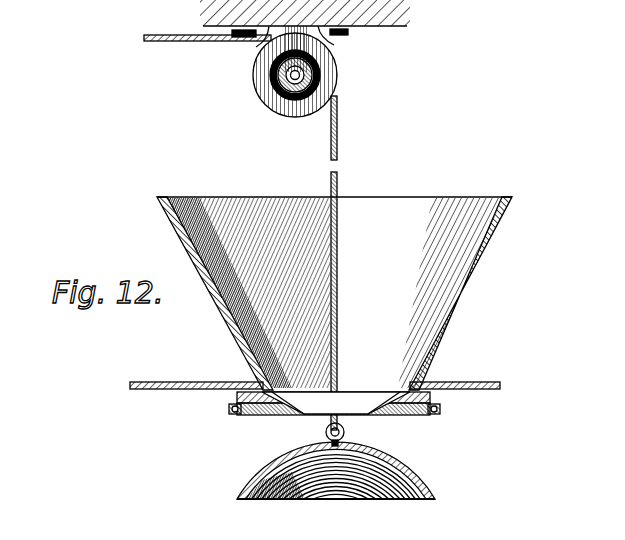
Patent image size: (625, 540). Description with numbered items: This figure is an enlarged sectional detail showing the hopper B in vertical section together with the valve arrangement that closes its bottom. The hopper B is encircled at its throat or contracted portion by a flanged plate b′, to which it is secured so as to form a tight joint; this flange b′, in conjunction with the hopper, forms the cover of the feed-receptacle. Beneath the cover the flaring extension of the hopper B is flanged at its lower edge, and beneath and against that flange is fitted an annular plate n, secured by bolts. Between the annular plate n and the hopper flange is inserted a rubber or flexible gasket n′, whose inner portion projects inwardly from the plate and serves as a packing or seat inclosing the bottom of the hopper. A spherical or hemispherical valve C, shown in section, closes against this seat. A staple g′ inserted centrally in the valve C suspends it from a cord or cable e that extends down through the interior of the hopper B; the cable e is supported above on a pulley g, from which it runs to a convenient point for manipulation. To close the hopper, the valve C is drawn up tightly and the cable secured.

The pulley g is at (283, 116).
The cord or cable e is at (339, 183).
The hopper B is at (334, 293).
The flanged plate b′ is at (206, 374).
The annular plate n is at (232, 413).
The rubber or flexible gasket n′ is at (232, 408).
The staple g′ is at (346, 432).
The spherical or hemispherical valve C is at (383, 453).